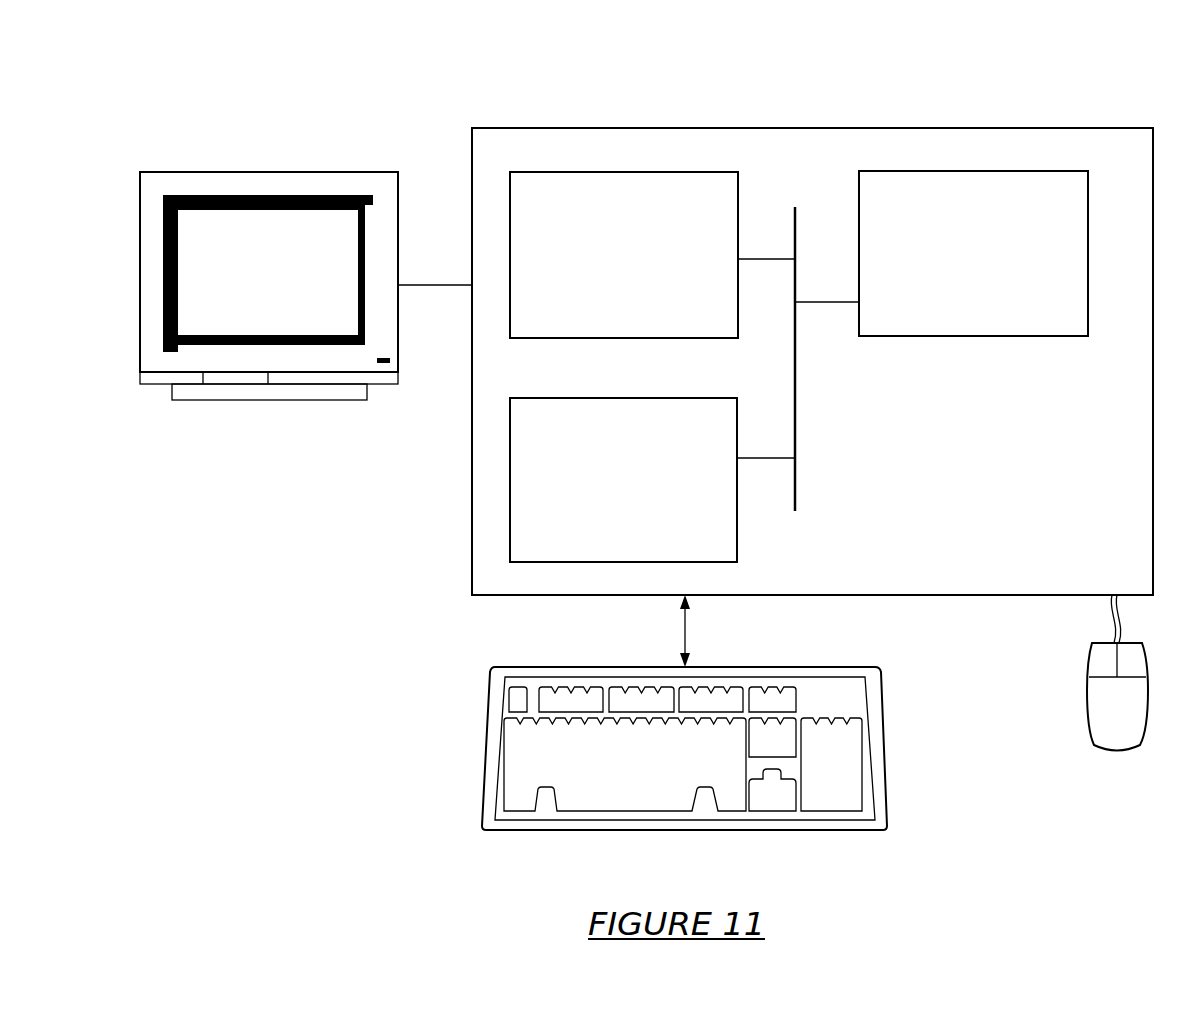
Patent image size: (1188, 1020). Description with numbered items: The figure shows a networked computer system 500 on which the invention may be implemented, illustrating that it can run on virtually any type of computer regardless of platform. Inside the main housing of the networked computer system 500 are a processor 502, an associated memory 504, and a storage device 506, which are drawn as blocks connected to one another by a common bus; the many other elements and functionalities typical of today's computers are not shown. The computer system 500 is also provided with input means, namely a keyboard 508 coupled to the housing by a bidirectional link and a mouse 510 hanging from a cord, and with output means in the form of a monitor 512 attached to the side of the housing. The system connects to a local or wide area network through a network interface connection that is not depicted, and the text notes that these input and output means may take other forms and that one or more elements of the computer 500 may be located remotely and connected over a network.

The networked computer system 500 is at (788, 72).
The processor 502 is at (968, 267).
The memory 504 is at (603, 267).
The storage device 506 is at (600, 494).
The keyboard 508 is at (595, 791).
The mouse 510 is at (1095, 719).
The monitor 512 is at (245, 291).